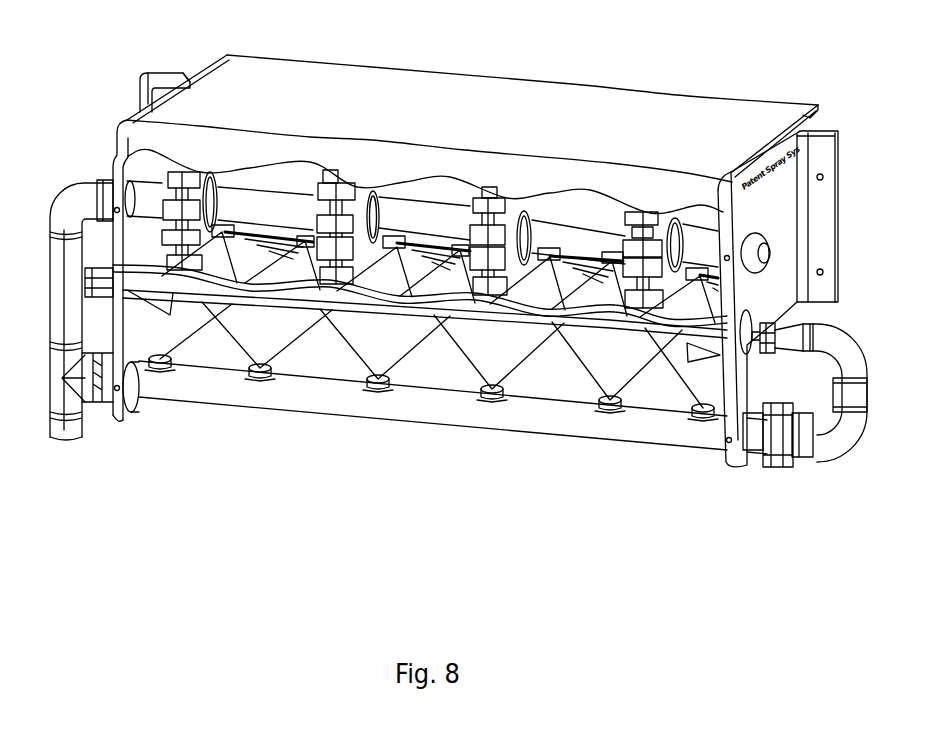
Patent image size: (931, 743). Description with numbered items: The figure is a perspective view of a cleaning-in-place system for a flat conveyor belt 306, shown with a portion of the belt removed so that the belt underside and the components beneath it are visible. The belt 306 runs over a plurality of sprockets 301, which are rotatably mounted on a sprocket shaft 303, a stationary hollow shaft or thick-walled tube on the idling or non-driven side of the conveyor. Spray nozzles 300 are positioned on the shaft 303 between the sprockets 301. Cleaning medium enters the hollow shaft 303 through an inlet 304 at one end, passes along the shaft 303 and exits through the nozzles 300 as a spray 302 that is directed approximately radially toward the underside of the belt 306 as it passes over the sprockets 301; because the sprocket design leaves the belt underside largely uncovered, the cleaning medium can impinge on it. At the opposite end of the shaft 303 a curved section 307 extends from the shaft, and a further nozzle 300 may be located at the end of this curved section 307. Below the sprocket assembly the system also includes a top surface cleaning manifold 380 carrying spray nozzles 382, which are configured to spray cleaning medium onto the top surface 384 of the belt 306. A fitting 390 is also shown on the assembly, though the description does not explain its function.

The spray nozzles 300 is at (152, 222).
The sprockets 301 is at (655, 237).
The spray 302 is at (390, 265).
The sprocket shaft 303 is at (424, 220).
The inlet 304 is at (70, 440).
The flat conveyor belt 306 is at (680, 130).
The curved section 307 is at (847, 425).
The top surface cleaning manifold 380 is at (538, 415).
The spray nozzles 382 is at (392, 387).
The top surface 384 is at (667, 323).
The pipe fitting 390 is at (110, 278).